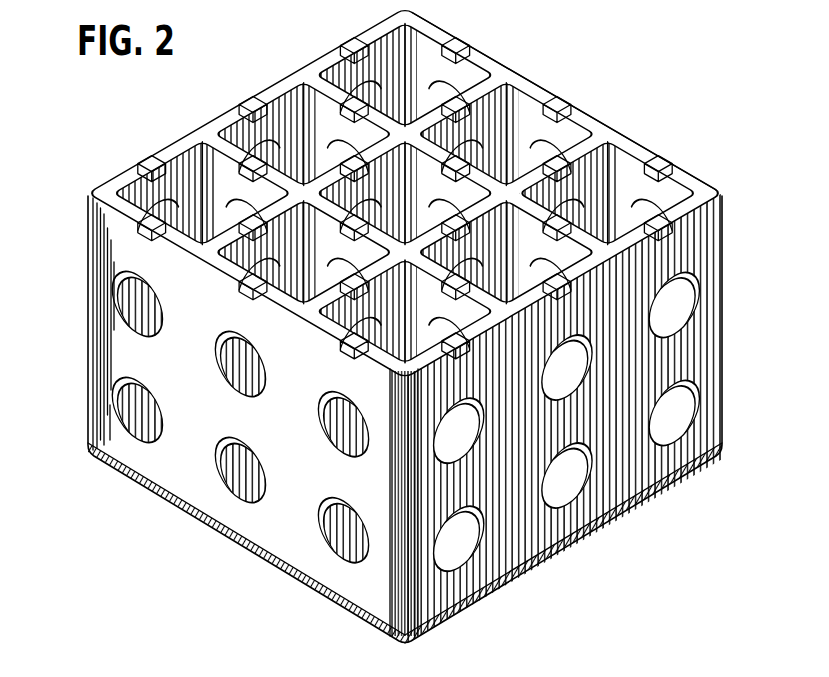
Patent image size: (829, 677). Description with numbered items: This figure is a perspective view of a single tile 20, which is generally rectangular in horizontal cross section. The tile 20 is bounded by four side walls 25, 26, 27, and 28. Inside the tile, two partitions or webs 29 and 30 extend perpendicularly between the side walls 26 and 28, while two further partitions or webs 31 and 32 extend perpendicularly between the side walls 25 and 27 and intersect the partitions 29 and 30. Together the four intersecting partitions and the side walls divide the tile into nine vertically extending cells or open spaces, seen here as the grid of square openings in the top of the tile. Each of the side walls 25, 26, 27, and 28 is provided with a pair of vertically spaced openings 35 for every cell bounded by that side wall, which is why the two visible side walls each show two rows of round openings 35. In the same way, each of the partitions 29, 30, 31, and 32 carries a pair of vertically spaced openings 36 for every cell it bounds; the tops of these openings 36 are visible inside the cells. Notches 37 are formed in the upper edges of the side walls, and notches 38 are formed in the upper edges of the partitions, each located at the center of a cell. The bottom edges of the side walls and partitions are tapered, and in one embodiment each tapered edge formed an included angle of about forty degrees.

The tile 20 is at (642, 493).
The side wall 25 is at (187, 497).
The side wall 26 is at (226, 120).
The side wall 27 is at (566, 106).
The side wall 28 is at (533, 566).
The partition 29 is at (152, 168).
The partition 30 is at (358, 44).
The partition 31 is at (608, 170).
The partition 32 is at (462, 56).
The opening 35 is at (455, 88).
The opening 36 is at (340, 150).
The notch 37 is at (668, 236).
The notch 38 is at (360, 302).